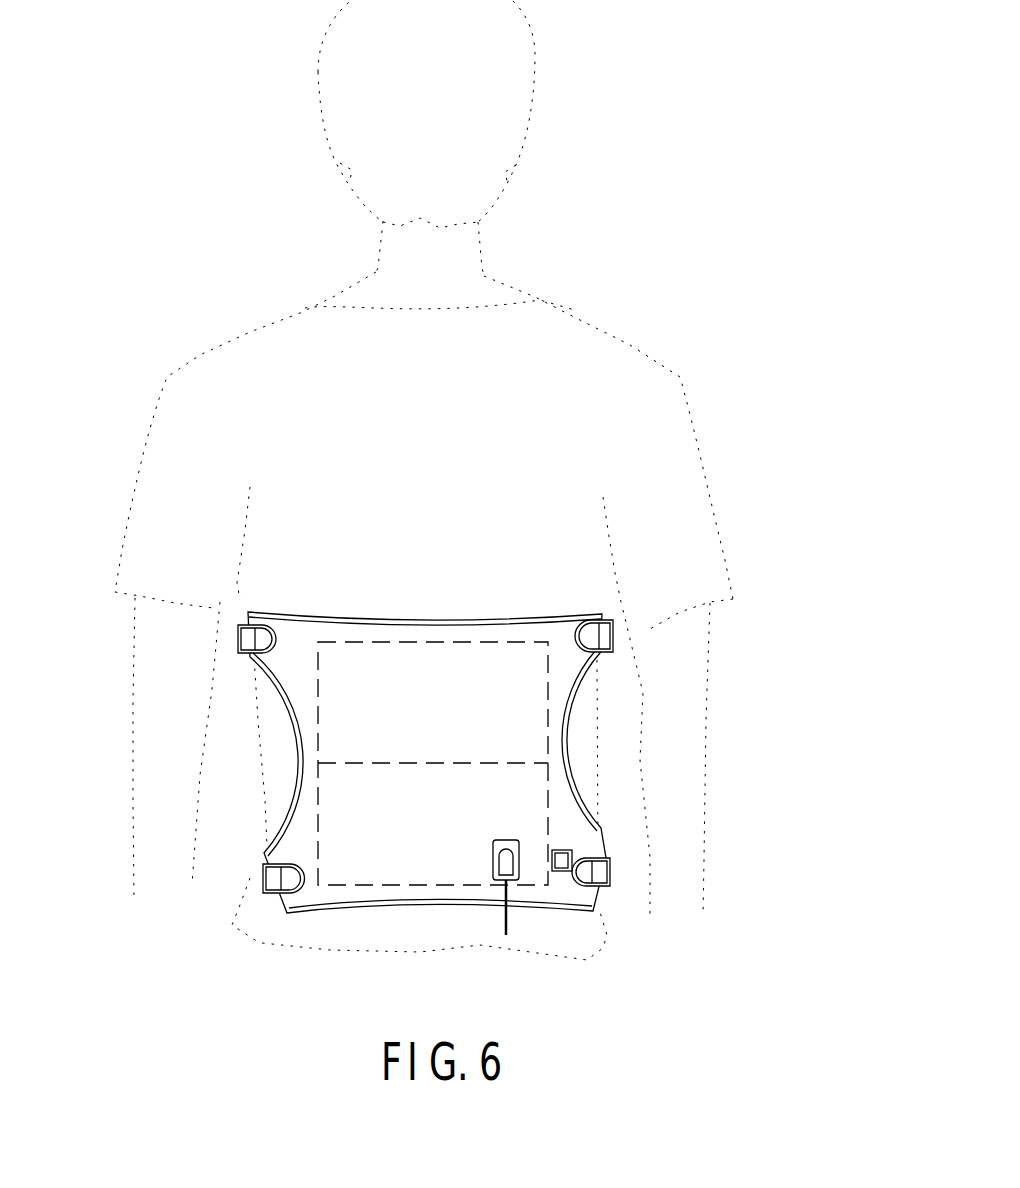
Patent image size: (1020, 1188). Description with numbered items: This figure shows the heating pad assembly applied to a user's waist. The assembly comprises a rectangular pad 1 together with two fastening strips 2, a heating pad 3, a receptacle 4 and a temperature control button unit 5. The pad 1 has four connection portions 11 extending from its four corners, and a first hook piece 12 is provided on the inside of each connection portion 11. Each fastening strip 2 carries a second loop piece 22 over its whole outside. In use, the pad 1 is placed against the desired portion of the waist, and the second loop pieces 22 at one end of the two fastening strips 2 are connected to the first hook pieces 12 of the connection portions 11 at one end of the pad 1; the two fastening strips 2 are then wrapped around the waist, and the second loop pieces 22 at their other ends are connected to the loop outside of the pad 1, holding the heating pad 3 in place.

The pad 1 is at (423, 694).
The fastening strip 2 is at (238, 638).
The heating pad 3 is at (300, 703).
The receptacle 4 is at (498, 863).
The temperature control button unit 5 is at (558, 872).
The connection portion 11 is at (600, 617).
The first hook piece 12 is at (590, 834).
The second loop piece 22 is at (608, 636).